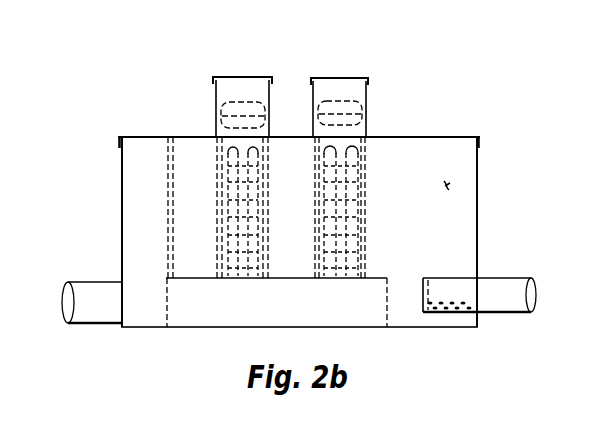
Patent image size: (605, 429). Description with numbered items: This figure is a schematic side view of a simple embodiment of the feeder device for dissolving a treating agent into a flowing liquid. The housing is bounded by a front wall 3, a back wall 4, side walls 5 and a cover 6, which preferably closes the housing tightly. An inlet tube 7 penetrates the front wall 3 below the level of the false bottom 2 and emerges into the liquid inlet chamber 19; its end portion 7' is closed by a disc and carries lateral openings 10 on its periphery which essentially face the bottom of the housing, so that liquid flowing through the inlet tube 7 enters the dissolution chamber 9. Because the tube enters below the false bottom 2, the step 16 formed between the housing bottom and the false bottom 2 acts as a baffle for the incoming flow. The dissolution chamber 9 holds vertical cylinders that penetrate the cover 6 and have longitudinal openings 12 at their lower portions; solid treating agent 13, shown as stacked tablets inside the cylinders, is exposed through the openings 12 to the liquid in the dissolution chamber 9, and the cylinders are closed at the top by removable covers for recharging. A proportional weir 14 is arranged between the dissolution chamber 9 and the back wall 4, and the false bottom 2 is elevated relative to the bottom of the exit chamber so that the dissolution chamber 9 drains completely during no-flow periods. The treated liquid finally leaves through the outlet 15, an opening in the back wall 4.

The false bottom 2 is at (372, 277).
The front wall 3 is at (477, 203).
The back wall 4 is at (122, 182).
The side wall 5 is at (363, 232).
The cover 6 is at (422, 137).
The inlet tube 7 is at (491, 282).
The end portion 7' is at (484, 261).
The dissolution chamber 9 is at (289, 245).
The lateral openings 10 is at (443, 311).
The longitudinal openings 12 is at (357, 217).
The solid treating agent 13 is at (340, 103).
The proportional weir 14 is at (184, 170).
The outlet 15 is at (95, 283).
The step 16 is at (388, 298).
The liquid inlet chamber 19 is at (448, 182).